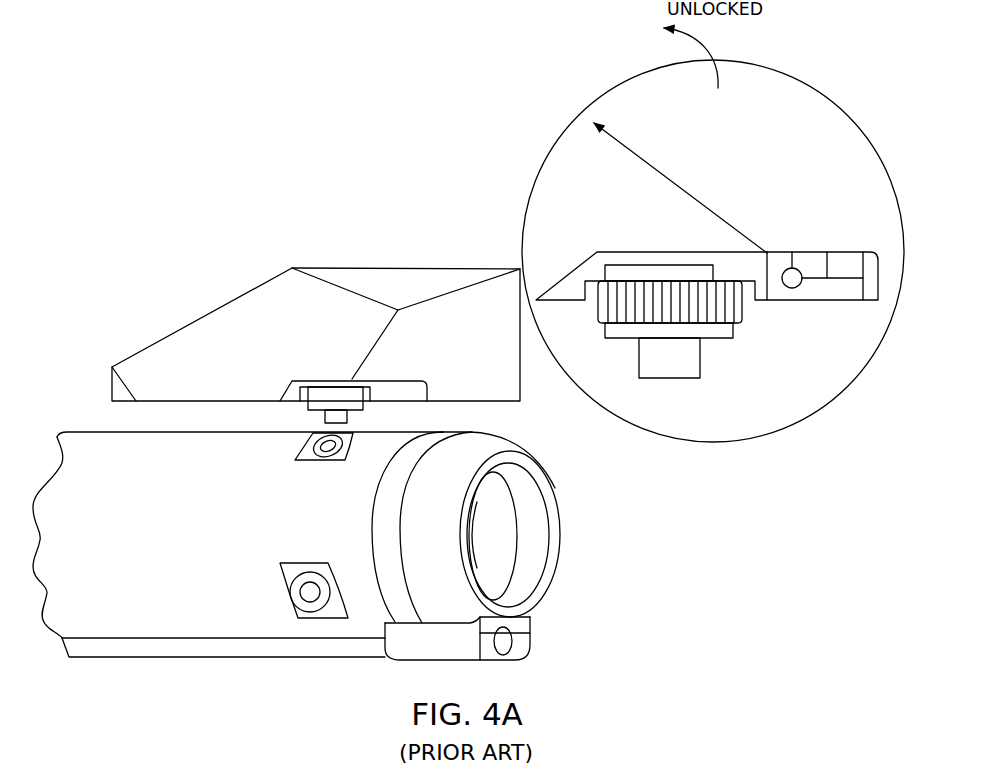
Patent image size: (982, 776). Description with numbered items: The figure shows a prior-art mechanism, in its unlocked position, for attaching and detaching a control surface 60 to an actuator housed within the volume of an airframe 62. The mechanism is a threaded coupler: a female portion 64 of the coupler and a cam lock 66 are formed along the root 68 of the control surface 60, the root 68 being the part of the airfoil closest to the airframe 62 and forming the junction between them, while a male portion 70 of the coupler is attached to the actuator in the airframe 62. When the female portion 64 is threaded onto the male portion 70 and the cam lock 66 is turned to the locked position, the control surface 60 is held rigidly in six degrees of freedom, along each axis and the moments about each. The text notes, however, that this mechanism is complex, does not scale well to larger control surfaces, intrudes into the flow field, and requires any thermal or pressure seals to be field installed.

The control surface 60 is at (316, 347).
The airframe 62 is at (296, 524).
The female portion of threaded coupler 64 is at (639, 353).
The cam lock 66 is at (822, 306).
The root 68 is at (208, 402).
The male portion of threaded coupler 70 is at (313, 462).